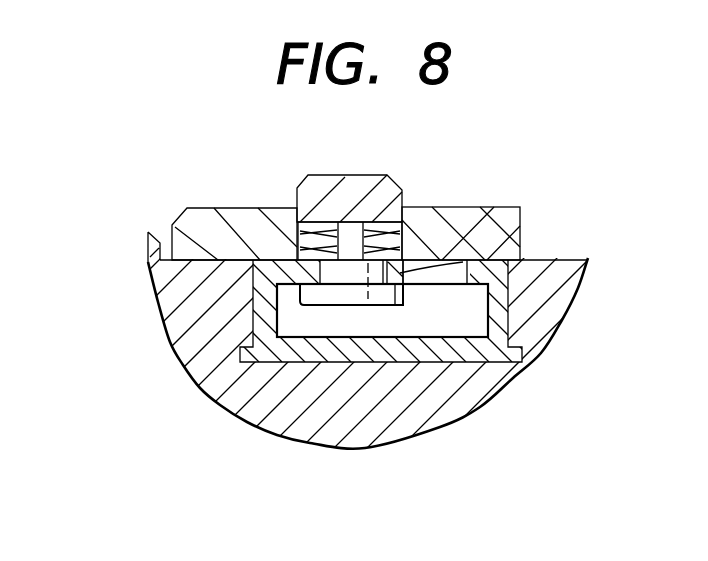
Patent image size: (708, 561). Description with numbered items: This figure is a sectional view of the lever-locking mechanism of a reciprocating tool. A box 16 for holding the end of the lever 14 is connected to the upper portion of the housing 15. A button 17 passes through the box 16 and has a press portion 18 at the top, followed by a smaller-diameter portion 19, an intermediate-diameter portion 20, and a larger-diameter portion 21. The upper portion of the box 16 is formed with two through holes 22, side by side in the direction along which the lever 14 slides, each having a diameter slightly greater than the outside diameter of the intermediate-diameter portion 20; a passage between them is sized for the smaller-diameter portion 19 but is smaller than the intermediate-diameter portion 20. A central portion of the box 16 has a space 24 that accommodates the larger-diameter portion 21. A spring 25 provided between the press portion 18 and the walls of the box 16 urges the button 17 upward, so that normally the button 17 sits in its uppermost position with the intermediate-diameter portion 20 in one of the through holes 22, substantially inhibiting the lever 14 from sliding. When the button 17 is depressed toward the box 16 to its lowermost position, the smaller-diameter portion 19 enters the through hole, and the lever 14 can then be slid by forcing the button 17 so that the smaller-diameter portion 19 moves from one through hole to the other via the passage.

The lever 14 is at (185, 232).
The housing 15 is at (216, 325).
The box 16 is at (312, 363).
The button 17 is at (370, 188).
The press portion 18 is at (372, 187).
The smaller-diameter portion 19 is at (338, 199).
The intermediate-diameter portion 20 is at (502, 208).
The larger-diameter portion 21 is at (350, 300).
The through holes 22 is at (466, 262).
The space 24 is at (426, 312).
The spring 25 is at (300, 242).